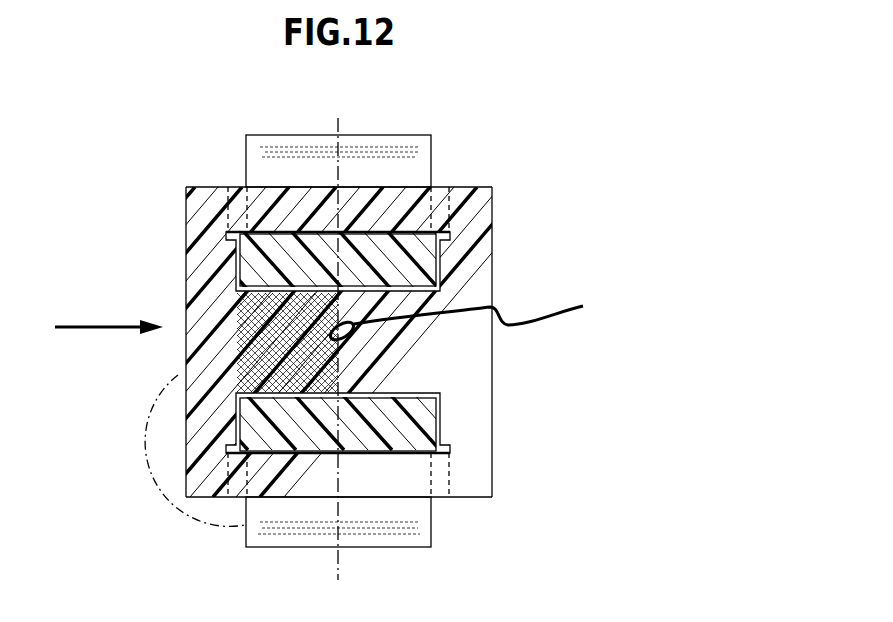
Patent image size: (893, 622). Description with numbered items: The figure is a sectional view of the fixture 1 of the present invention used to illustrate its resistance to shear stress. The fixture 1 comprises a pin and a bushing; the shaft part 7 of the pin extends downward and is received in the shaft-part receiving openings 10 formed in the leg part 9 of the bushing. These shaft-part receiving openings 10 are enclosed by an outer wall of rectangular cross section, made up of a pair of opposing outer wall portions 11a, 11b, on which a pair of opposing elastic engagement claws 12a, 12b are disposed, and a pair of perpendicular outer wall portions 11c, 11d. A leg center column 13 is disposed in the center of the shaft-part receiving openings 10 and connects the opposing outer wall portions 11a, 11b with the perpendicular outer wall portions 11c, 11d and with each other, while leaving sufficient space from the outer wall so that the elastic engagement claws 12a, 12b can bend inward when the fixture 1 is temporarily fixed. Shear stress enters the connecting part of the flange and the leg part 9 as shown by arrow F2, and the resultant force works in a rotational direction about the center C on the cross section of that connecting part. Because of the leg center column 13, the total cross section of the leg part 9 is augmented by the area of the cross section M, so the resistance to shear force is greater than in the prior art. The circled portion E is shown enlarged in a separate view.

The fixture 1 is at (587, 125).
The shaft part 7 is at (378, 245).
The leg part 9 is at (477, 187).
The shaft-part receiving openings 10 is at (445, 240).
The opposing outer wall portion 11a is at (285, 210).
The opposing outer wall portion 11b is at (420, 480).
The perpendicular outer wall portion 11c is at (186, 240).
The perpendicular outer wall portion 11d is at (480, 272).
The elastic engagement claw 12a is at (385, 150).
The elastic engagement claw 12b is at (300, 530).
The leg center column 13 is at (372, 352).
The center C is at (481, 307).
The cross section M is at (240, 305).
The circled portion E is at (142, 430).
The arrow indicating shear stress F2 is at (96, 326).